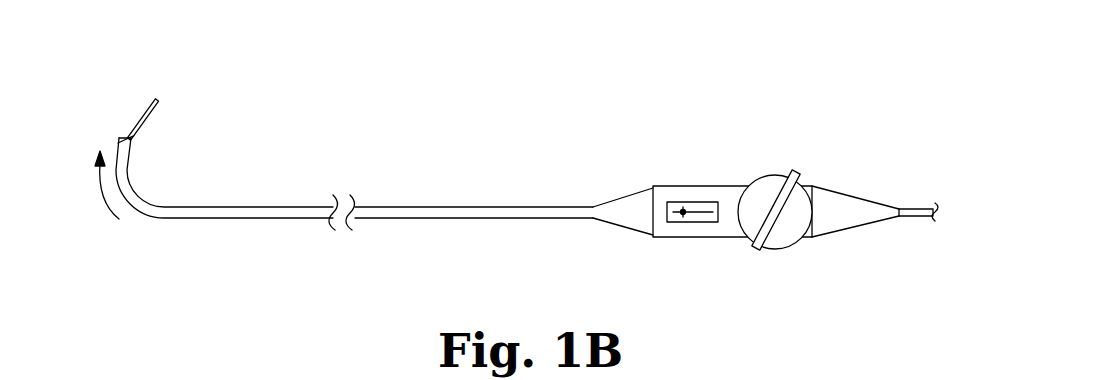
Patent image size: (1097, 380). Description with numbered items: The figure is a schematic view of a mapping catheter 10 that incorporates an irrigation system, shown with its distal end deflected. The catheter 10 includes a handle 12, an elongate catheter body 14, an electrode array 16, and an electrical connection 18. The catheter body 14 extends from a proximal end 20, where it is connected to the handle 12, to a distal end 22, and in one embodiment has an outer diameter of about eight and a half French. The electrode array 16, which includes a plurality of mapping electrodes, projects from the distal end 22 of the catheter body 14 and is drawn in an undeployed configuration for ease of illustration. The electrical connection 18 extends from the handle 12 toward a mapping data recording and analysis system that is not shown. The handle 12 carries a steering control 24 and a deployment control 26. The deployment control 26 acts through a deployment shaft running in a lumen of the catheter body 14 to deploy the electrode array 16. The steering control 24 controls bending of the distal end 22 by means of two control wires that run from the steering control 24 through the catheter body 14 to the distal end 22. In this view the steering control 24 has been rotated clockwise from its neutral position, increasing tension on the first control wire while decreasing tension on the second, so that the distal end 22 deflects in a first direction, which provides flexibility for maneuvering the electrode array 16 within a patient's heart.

The catheter 10 is at (652, 73).
The handle 12 is at (674, 186).
The elongate catheter body 14 is at (470, 206).
The electrode array 16 is at (157, 100).
The electrical connection 18 is at (925, 207).
The proximal end 20 is at (588, 204).
The distal end 22 is at (181, 197).
The steering control 24 is at (798, 244).
The deployment control 26 is at (703, 222).